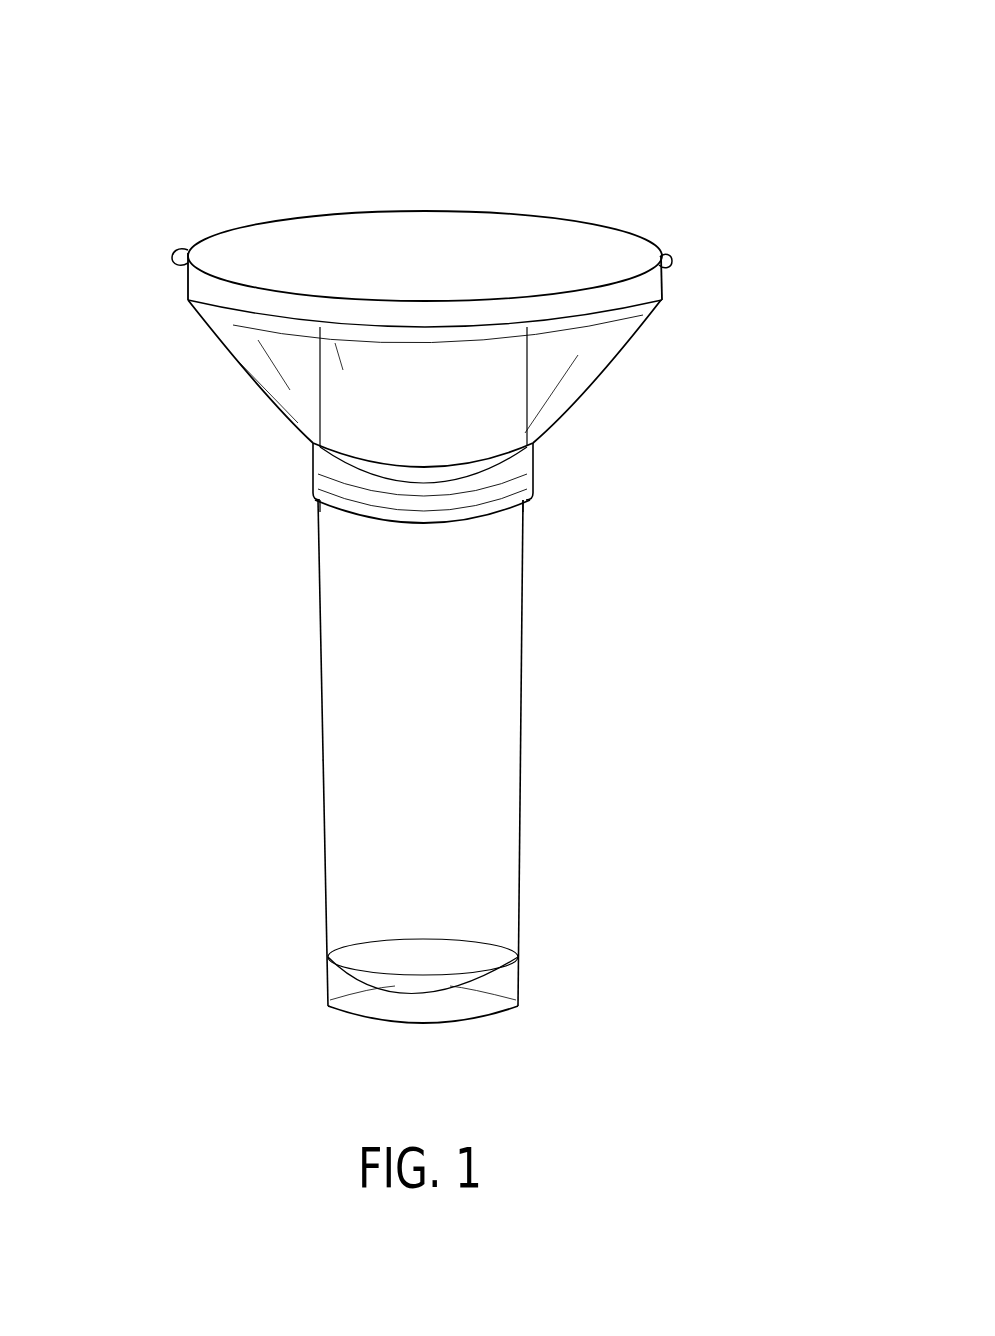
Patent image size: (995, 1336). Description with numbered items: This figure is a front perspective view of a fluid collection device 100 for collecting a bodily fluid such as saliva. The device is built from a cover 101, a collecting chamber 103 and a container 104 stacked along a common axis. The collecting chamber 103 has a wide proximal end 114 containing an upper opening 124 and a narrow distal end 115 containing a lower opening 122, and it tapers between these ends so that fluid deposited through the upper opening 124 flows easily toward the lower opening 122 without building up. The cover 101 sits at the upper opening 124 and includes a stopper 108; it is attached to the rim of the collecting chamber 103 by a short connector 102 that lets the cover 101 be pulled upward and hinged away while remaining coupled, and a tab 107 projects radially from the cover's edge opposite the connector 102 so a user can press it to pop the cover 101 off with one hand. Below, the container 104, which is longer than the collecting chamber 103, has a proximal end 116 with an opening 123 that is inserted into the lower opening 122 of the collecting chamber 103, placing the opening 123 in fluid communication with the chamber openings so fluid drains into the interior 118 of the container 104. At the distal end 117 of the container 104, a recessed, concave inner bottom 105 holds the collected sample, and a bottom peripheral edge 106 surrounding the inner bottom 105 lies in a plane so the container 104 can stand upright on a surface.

The fluid collection device 100 is at (237, 90).
The cover 101 is at (468, 225).
The connector 102 is at (190, 248).
The tab 107 is at (666, 253).
The proximal end 114 is at (172, 294).
The collecting chamber 103 is at (243, 382).
The upper opening 124 is at (643, 323).
The stopper 108 is at (523, 390).
The distal end 115 is at (312, 477).
The proximal end 116 is at (313, 503).
The opening 123 is at (530, 460).
The lower opening 122 is at (473, 517).
The container 104 is at (320, 627).
The interior 118 is at (363, 697).
The inner bottom 105 is at (368, 958).
The bottom peripheral edge 106 is at (328, 997).
The distal end 117 is at (348, 1021).